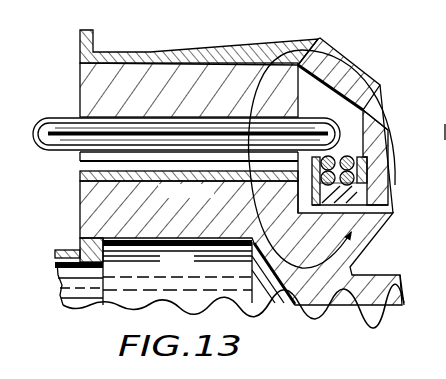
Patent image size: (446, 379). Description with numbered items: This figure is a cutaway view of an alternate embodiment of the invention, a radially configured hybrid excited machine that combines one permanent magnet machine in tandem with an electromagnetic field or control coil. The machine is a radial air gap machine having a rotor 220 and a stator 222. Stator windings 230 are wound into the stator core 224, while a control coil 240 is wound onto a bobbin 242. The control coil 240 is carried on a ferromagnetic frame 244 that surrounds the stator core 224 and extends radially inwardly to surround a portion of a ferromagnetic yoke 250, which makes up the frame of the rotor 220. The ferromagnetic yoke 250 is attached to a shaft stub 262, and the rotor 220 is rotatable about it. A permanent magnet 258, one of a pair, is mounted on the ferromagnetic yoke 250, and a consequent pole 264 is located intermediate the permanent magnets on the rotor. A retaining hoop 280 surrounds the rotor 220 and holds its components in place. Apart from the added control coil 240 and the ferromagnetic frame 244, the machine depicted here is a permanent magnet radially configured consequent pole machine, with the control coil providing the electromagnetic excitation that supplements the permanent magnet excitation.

The rotor 220 is at (363, 268).
The stator 222 is at (306, 32).
The stator core 224 is at (80, 70).
The stator windings 230 is at (61, 100).
The control coil 240 is at (322, 193).
The bobbin 242 is at (358, 178).
The ferromagnetic frame 244 is at (346, 70).
The ferromagnetic yoke 250 is at (283, 270).
The permanent magnet 258 is at (445, 226).
The shaft stub 262 is at (85, 262).
The consequent pole 264 is at (182, 200).
The retaining hoop 280 is at (80, 182).